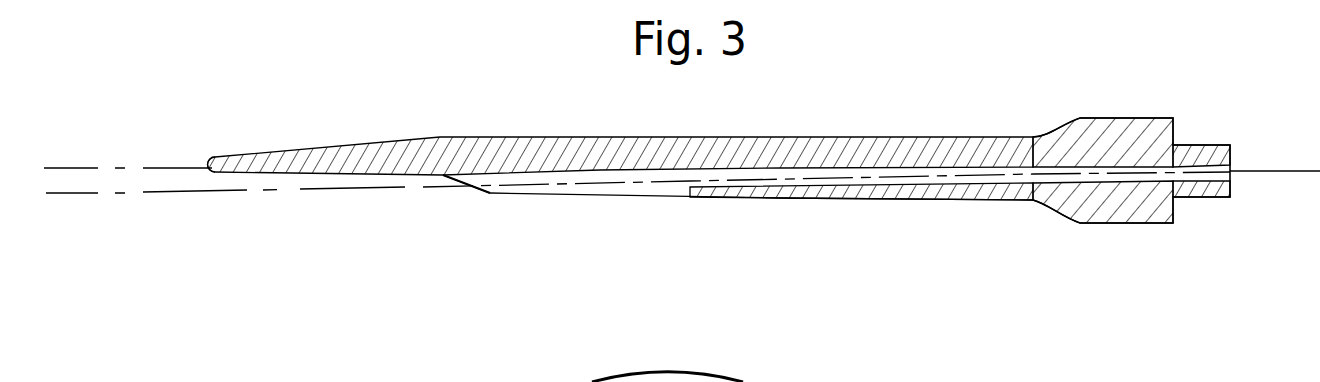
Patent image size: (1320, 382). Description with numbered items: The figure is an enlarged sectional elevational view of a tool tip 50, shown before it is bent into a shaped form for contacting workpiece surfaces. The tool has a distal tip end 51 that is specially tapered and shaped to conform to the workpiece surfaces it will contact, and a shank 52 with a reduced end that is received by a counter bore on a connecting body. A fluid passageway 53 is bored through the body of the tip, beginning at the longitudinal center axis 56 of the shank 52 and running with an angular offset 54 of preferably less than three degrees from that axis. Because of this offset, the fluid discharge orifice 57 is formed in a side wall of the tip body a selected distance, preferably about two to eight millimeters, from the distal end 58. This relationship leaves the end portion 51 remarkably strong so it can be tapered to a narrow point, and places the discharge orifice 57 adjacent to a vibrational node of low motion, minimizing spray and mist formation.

The tool tip 50 is at (747, 137).
The distal tip end 51 is at (383, 138).
The shank 52 is at (980, 137).
The fluid passageway 53 is at (735, 184).
The angular offset 54 is at (170, 120).
The longitudinal center axis 56 is at (1293, 169).
The fluid discharge orifice 57 is at (458, 184).
The distal end 58 is at (208, 166).